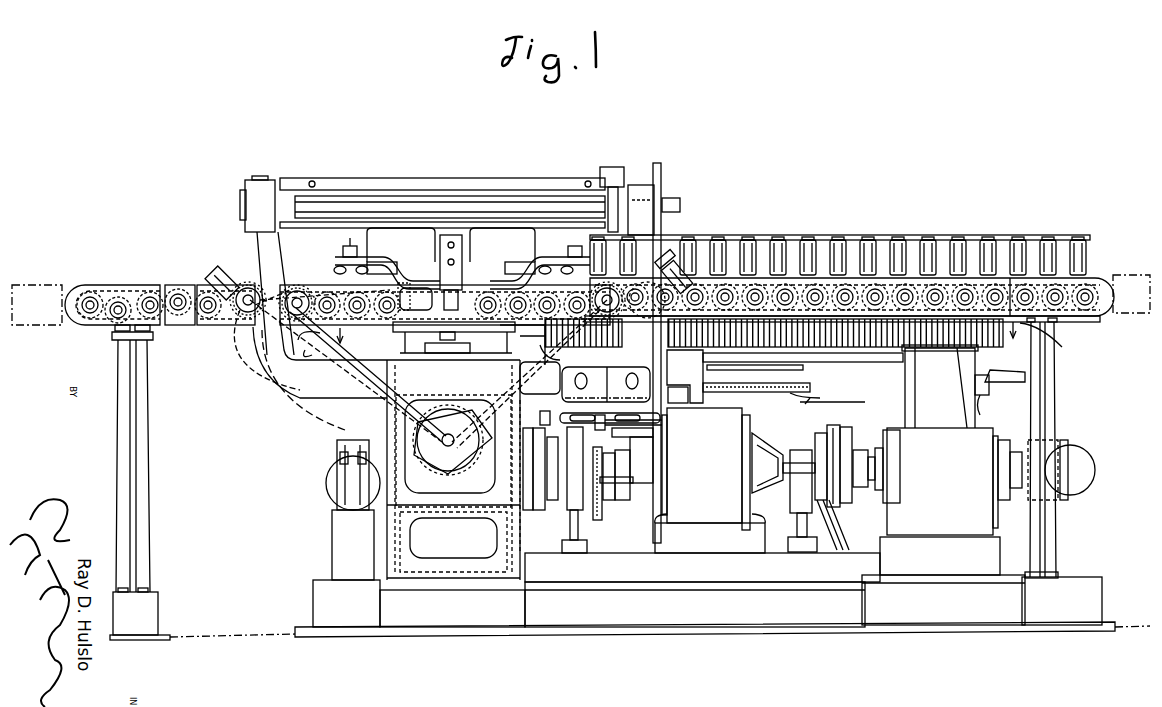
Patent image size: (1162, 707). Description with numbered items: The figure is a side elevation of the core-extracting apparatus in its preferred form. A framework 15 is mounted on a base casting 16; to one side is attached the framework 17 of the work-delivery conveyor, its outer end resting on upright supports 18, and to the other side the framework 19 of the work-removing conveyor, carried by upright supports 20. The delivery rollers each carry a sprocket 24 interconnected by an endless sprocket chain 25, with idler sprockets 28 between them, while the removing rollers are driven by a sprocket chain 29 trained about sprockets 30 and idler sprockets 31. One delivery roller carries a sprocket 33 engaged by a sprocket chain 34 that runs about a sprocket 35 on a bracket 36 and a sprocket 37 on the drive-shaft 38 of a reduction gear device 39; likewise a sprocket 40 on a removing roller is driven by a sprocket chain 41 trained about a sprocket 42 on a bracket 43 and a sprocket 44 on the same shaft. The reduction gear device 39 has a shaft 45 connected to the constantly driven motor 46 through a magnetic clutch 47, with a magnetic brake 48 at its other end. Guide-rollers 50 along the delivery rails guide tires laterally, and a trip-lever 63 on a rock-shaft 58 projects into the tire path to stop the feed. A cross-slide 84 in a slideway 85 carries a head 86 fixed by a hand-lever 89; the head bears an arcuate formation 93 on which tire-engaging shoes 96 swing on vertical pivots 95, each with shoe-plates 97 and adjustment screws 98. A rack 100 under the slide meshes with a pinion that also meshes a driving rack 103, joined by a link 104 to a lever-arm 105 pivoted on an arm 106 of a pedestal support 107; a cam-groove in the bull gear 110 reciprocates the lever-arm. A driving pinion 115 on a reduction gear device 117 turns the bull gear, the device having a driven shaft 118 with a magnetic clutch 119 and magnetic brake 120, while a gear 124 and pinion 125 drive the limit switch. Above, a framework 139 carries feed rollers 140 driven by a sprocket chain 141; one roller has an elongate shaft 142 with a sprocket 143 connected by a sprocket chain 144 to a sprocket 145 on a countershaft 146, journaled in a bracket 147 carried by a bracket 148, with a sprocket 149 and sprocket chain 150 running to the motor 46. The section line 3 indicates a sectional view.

The section line 3 is at (684, 346).
The framework 15 is at (387, 400).
The base casting 16 is at (682, 622).
The framework of work-delivery conveyor 17 is at (1098, 315).
The upright supports 18 is at (1052, 398).
The framework of work-removing conveyor 19 is at (78, 330).
The upright supports 20 is at (147, 414).
The sprocket 24 is at (1035, 280).
The endless sprocket chain 25 is at (1100, 280).
The idler sprockets 28 is at (920, 290).
The endless sprocket chain 29 is at (118, 295).
The sprockets 30 is at (150, 290).
The idler sprockets 31 is at (102, 330).
The sprocket 33 is at (596, 292).
The endless sprocket chain 34 is at (525, 405).
The sprocket 35 is at (683, 260).
The bracket 36 is at (690, 265).
The sprocket 37 is at (420, 428).
The drive-shaft 38 is at (449, 446).
The reduction gear device 39 is at (450, 505).
The sprocket 40 is at (292, 286).
The sprocket chain 41 is at (255, 330).
The sprocket 42 is at (246, 283).
The bracket 43 is at (212, 268).
The sprocket 44 is at (432, 460).
The shaft 45 is at (495, 520).
The motor 46 is at (765, 502).
The magnetic clutch 47 is at (538, 517).
The magnetic brake 48 is at (327, 487).
The guide-rollers 50 is at (1090, 250).
The rock-shaft 58 is at (387, 372).
The trip-lever 63 is at (432, 296).
The cross-slide 84 is at (500, 360).
The slideway 85 is at (505, 372).
The head 86 is at (490, 228).
The hand-lever 89 is at (450, 235).
The arcuate bracket-like formation 93 is at (415, 228).
The vertical pivots 95 is at (558, 246).
The tire-engaging shoes 96 is at (560, 262).
The shoe-plates 97 is at (530, 225).
The adjustment screws 98 is at (538, 270).
The rack 100 is at (447, 360).
The driving rack 103 is at (862, 358).
The link 104 is at (1008, 383).
The lever-arm 105 is at (986, 405).
The radially extending arm 106 is at (846, 393).
The pedestal support 107 is at (821, 391).
The bull gear 110 is at (756, 378).
The driving pinion 115 is at (940, 345).
The reduction gear device 117 is at (985, 508).
The driven shaft 118 is at (864, 488).
The magnetic clutch 119 is at (836, 515).
The magnetic brake 120 is at (1076, 462).
The gear 124 is at (712, 382).
The pinion 125 is at (800, 376).
The framework 139 is at (252, 190).
The feed rollers 140 is at (575, 200).
The endless sprocket chain 141 is at (606, 176).
The elongate shaft 142 is at (682, 205).
The sprocket 143 is at (663, 192).
The sprocket chain 144 is at (668, 420).
The sprocket 145 is at (710, 533).
The countershaft 146 is at (612, 495).
The bracket 147 is at (700, 435).
The bracket 148 is at (610, 370).
The sprocket 149 is at (590, 535).
The sprocket chain 150 is at (600, 512).